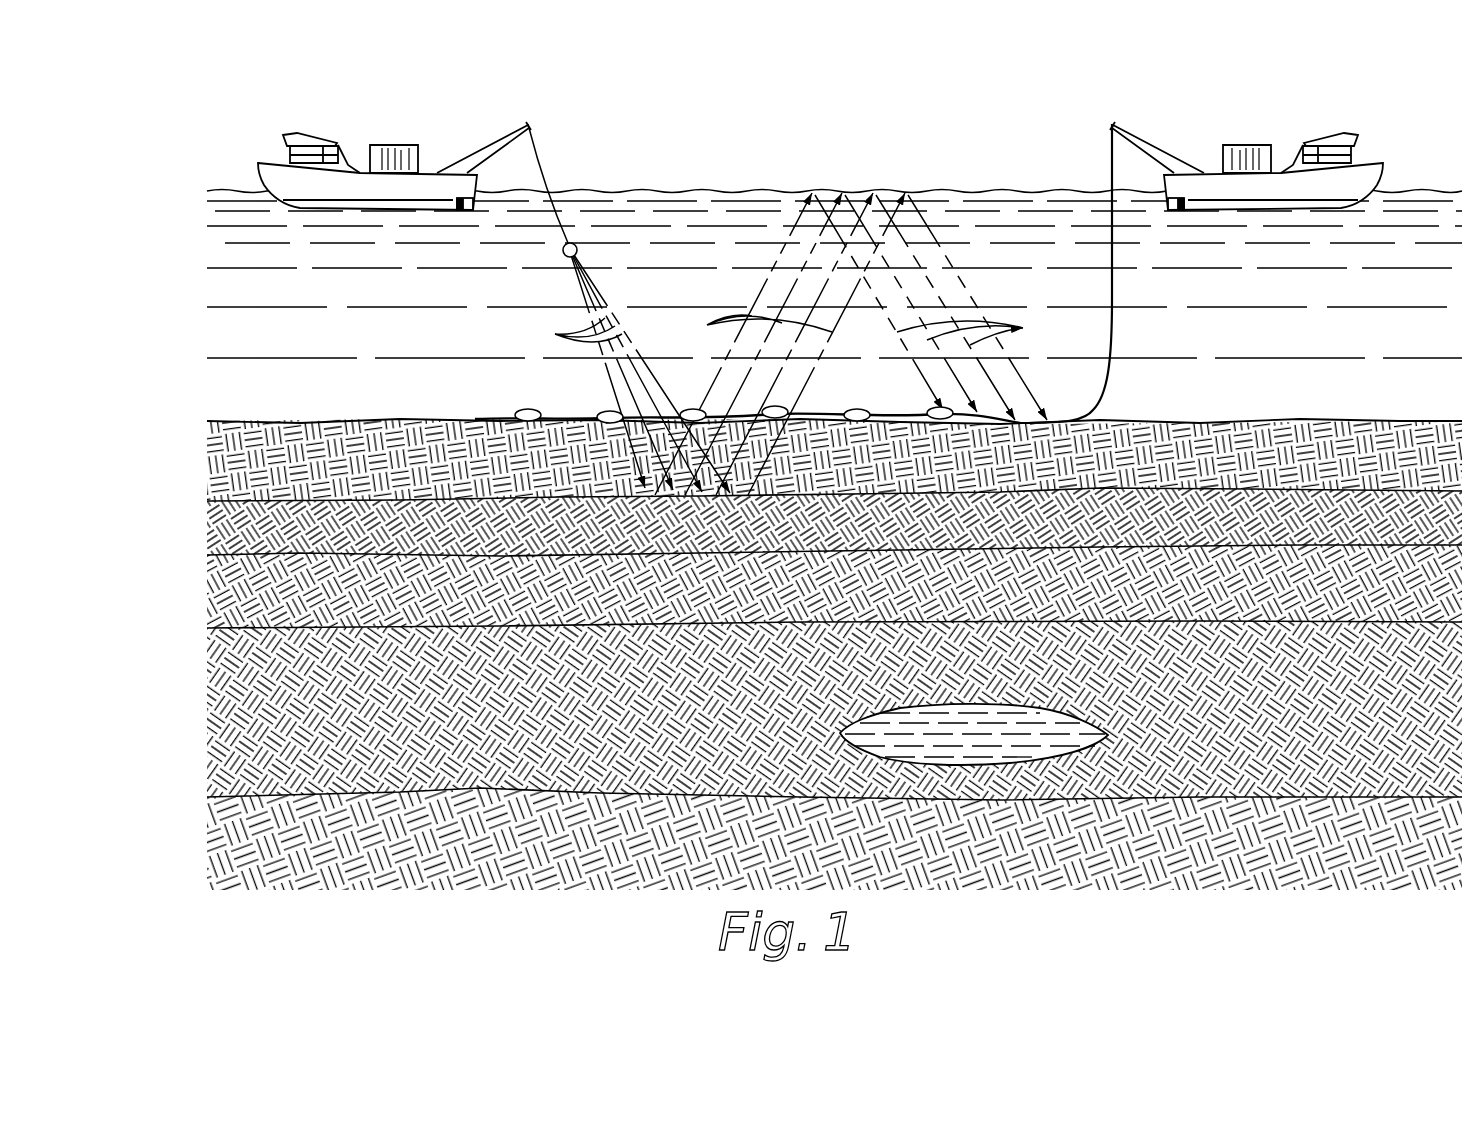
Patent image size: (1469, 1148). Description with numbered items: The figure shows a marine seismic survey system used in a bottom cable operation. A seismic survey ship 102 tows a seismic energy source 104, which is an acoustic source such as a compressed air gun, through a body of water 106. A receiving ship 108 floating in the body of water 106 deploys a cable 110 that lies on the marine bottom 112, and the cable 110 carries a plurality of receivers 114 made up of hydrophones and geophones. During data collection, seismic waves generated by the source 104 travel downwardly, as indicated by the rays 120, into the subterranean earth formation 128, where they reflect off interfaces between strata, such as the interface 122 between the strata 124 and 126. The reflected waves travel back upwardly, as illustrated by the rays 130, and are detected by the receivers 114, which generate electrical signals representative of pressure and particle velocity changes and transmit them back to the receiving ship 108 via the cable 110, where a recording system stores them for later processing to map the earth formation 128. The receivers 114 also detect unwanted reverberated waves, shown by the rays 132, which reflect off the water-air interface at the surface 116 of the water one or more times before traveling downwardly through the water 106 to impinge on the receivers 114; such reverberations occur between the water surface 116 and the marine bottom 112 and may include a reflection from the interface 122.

The seismic survey ship 102 is at (312, 140).
The seismic energy source 104 is at (562, 250).
The body of water 106 is at (1372, 345).
The receiving ship 108 is at (1332, 140).
The cable 110 is at (1114, 288).
The marine bottom 112 is at (1333, 421).
The receiver 114 is at (526, 410).
The surface of the water 116 is at (978, 190).
The rays 120 is at (617, 374).
The interface 122 is at (1268, 488).
The stratum 124 is at (1141, 464).
The stratum 126 is at (1188, 520).
The subterranean earth formation 128 is at (197, 587).
The rays 130 is at (780, 344).
The rays 132 is at (943, 307).